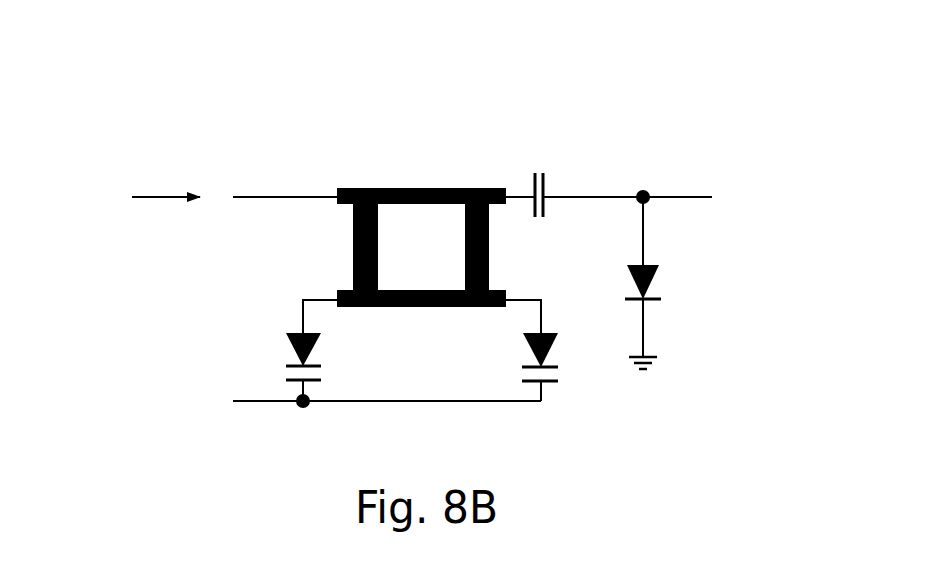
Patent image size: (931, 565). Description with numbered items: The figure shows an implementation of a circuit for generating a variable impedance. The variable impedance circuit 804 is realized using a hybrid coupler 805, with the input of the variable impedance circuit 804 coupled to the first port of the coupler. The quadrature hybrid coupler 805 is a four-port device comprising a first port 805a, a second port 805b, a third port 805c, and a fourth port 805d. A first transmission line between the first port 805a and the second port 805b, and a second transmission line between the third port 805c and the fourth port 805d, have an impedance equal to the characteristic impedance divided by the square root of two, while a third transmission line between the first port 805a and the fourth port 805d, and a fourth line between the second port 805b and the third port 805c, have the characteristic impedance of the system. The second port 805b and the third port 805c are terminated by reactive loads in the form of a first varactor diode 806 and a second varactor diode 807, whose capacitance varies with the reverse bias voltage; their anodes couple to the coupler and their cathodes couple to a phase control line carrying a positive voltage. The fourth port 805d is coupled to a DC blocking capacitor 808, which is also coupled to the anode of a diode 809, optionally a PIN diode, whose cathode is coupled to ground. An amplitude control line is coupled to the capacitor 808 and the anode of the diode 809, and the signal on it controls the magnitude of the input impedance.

The variable impedance circuit 804 is at (108, 90).
The hybrid coupler 805 is at (347, 218).
The first port 805a is at (332, 183).
The second port 805b is at (337, 280).
The third port 805c is at (502, 281).
The fourth port 805d is at (483, 185).
The first varactor diode 806 is at (267, 349).
The second varactor diode 807 is at (553, 350).
The DC blocking capacitor 808 is at (540, 168).
The diode 809 is at (752, 280).